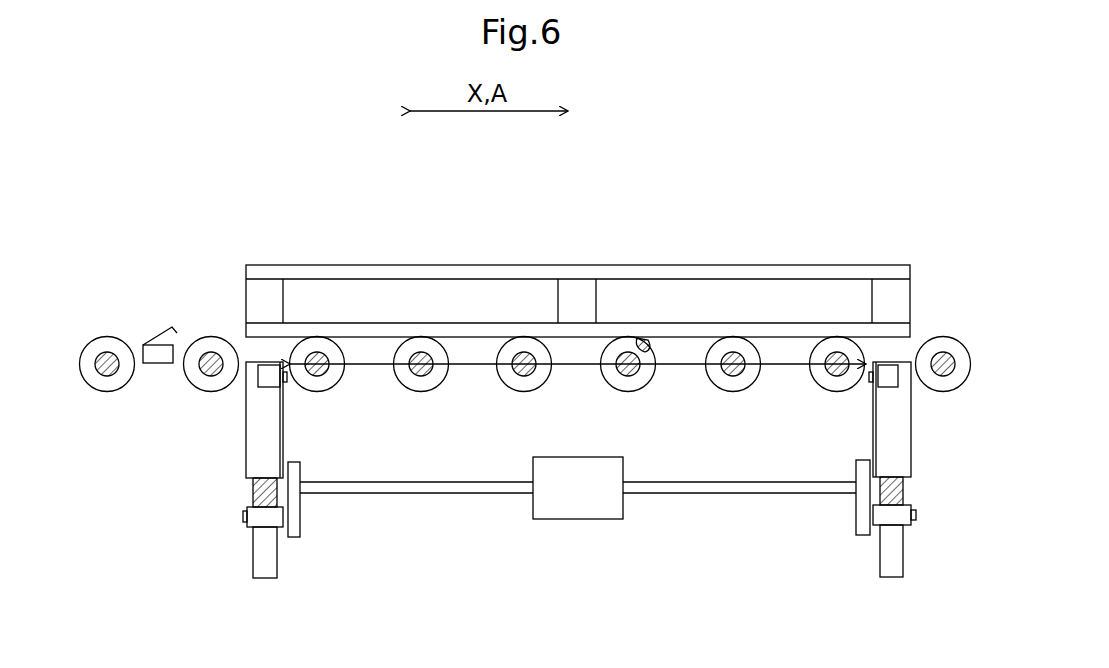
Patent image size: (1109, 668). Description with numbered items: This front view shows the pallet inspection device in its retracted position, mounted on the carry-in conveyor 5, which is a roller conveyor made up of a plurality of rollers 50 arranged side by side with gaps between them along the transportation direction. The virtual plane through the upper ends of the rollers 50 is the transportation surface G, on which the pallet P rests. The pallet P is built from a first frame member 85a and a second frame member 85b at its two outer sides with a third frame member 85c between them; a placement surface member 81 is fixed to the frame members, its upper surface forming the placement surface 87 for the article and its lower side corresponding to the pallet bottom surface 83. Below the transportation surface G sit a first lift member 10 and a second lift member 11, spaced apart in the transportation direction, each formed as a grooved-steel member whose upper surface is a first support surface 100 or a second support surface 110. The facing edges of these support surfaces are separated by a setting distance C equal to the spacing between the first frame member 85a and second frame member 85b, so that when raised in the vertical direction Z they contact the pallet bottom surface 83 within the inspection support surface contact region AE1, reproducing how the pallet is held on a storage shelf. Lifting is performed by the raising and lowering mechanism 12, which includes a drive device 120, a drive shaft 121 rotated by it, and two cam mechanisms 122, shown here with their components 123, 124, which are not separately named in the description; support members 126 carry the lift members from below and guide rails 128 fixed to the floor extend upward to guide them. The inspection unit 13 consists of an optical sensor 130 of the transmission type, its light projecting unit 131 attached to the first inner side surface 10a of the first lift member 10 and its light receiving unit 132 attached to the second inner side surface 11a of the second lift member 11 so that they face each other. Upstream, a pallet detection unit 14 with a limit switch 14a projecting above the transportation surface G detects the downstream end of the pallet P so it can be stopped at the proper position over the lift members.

The carry-in conveyor 5 is at (578, 247).
The first lift member 10 is at (871, 419).
The first inner side surface 10a is at (876, 440).
The second lift member 11 is at (275, 420).
The second inner side surface 11a is at (283, 440).
The raising and lowering mechanism 12 is at (546, 547).
The inspection unit 13 is at (578, 400).
The pallet detection unit 14 is at (148, 394).
The limit switch 14a is at (158, 366).
The roller 50 is at (111, 347).
The placement surface member 81 is at (440, 266).
The pallet bottom surface 83 is at (383, 337).
The first frame member 85a is at (890, 300).
The second frame member 85b is at (263, 302).
The third frame member 85c is at (576, 300).
The placement surface 87 is at (703, 265).
The first support surface 100 is at (912, 338).
The second support surface 110 is at (247, 360).
The drive device 120 is at (572, 500).
The drive shaft 121 is at (677, 487).
The cam mechanism 122 is at (546, 553).
The transmission plate 123 is at (300, 527).
The transmission block 124 is at (243, 517).
The support member 126 is at (253, 490).
The guide rail 128 is at (265, 562).
The optical sensor 130 is at (578, 400).
The light projecting unit 131 is at (873, 380).
The light receiving unit 132 is at (282, 410).
The setting distance C is at (576, 367).
The transportation surface G is at (648, 338).
The pallet P is at (485, 248).
The vertical direction Z is at (157, 95).
The inspection support surface contact region AE1 is at (283, 256).